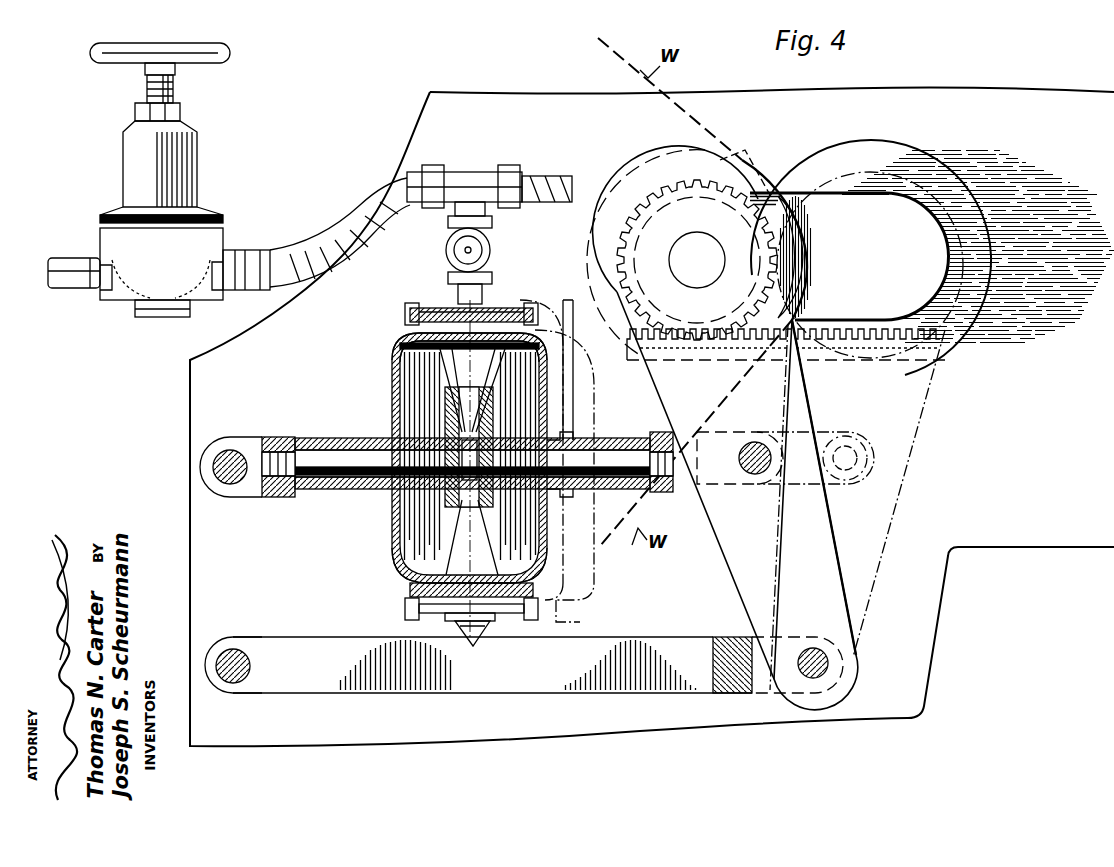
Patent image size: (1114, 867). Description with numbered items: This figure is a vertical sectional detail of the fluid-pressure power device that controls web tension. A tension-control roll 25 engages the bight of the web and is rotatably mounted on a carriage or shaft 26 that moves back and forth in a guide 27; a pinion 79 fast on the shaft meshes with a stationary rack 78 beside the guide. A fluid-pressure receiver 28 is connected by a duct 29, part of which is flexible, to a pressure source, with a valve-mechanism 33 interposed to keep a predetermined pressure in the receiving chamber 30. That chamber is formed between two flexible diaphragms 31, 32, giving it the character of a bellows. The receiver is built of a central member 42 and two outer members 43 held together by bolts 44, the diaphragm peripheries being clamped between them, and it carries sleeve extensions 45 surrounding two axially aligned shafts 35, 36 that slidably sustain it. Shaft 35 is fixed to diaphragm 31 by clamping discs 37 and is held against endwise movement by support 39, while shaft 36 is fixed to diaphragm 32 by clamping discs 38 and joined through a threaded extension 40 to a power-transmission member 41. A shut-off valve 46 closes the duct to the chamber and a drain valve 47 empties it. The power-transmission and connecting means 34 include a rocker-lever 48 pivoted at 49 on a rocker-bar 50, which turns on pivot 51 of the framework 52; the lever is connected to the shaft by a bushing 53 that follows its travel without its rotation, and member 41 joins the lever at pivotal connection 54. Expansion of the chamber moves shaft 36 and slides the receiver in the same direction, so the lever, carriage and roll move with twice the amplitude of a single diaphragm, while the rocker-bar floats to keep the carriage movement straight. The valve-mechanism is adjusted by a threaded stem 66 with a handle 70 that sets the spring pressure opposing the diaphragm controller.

The tension-control roll 25 is at (800, 242).
The carriage or shaft 26 is at (697, 260).
The guide 27 is at (884, 306).
The fluid-pressure receiver 28 is at (385, 545).
The duct 29 is at (70, 258).
The fluid-pressure receiving chamber 30 is at (393, 366).
The flexible diaphragm 31 is at (401, 388).
The flexible diaphragm 32 is at (528, 372).
The valve-mechanism 33 is at (200, 172).
The power-transmission and connecting means 34 is at (827, 420).
The shaft 35 is at (326, 490).
The shaft 36 is at (608, 490).
The clamping discs 37 is at (446, 490).
The clamping discs 38 is at (490, 490).
The support 39 is at (232, 455).
The threaded extension 40 is at (680, 484).
The power-transmission member 41 is at (728, 486).
The central member 42 is at (452, 620).
The outer members 43 is at (396, 572).
The bolts 44 is at (408, 314).
The sleeve extensions 45 is at (308, 438).
The shut-off valve 46 is at (492, 250).
The drain valve 47 is at (474, 640).
The rocker-lever 48 is at (820, 545).
The pivot 49 is at (816, 672).
The rocker-bar 50 is at (652, 678).
The pivot 51 is at (236, 650).
The framework 52 is at (246, 557).
The bushing 53 is at (648, 185).
The pivotal connection 54 is at (770, 456).
The stem 66 is at (176, 94).
The handle 70 is at (232, 52).
The stationary rack 78 is at (938, 344).
The pinion 79 is at (738, 156).